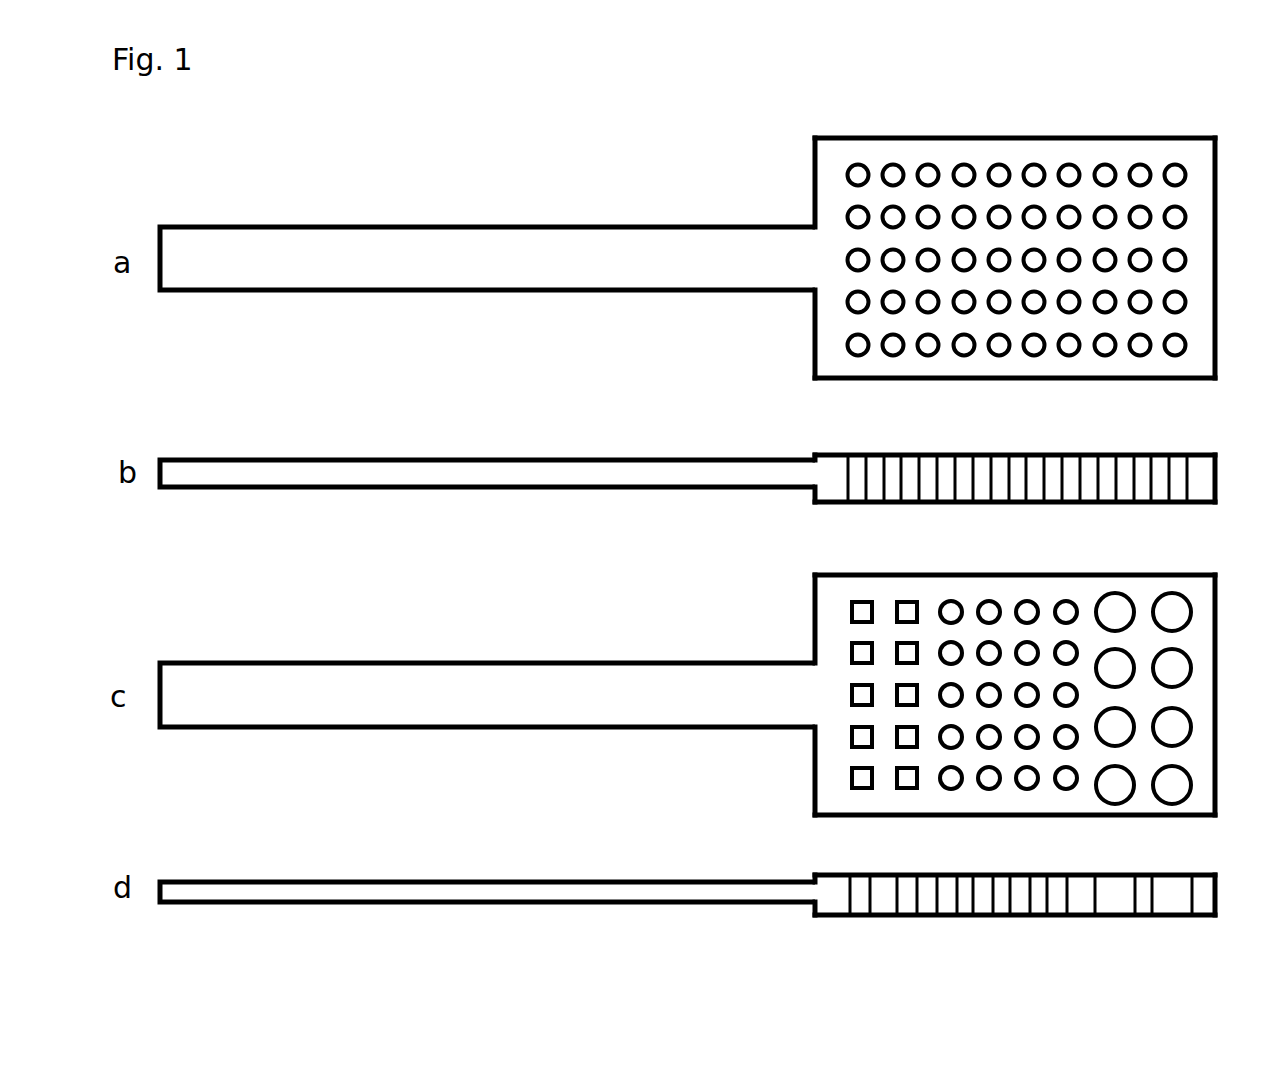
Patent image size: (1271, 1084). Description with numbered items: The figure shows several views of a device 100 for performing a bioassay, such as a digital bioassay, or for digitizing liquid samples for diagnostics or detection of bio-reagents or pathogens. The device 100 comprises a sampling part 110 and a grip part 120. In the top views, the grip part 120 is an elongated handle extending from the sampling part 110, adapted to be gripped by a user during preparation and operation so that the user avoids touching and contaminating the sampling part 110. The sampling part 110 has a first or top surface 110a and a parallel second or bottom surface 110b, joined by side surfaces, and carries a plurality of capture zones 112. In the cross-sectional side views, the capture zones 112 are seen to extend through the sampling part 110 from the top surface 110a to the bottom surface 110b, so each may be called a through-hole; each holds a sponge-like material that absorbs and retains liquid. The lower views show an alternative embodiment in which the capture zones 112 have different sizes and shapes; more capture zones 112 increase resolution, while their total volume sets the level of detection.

The device 100 is at (713, 509).
The sampling part 110 is at (804, 176).
The first surface 110a is at (840, 150).
The second surface 110b is at (833, 502).
The capture zones 112 is at (1175, 163).
The grip part 120 is at (498, 217).